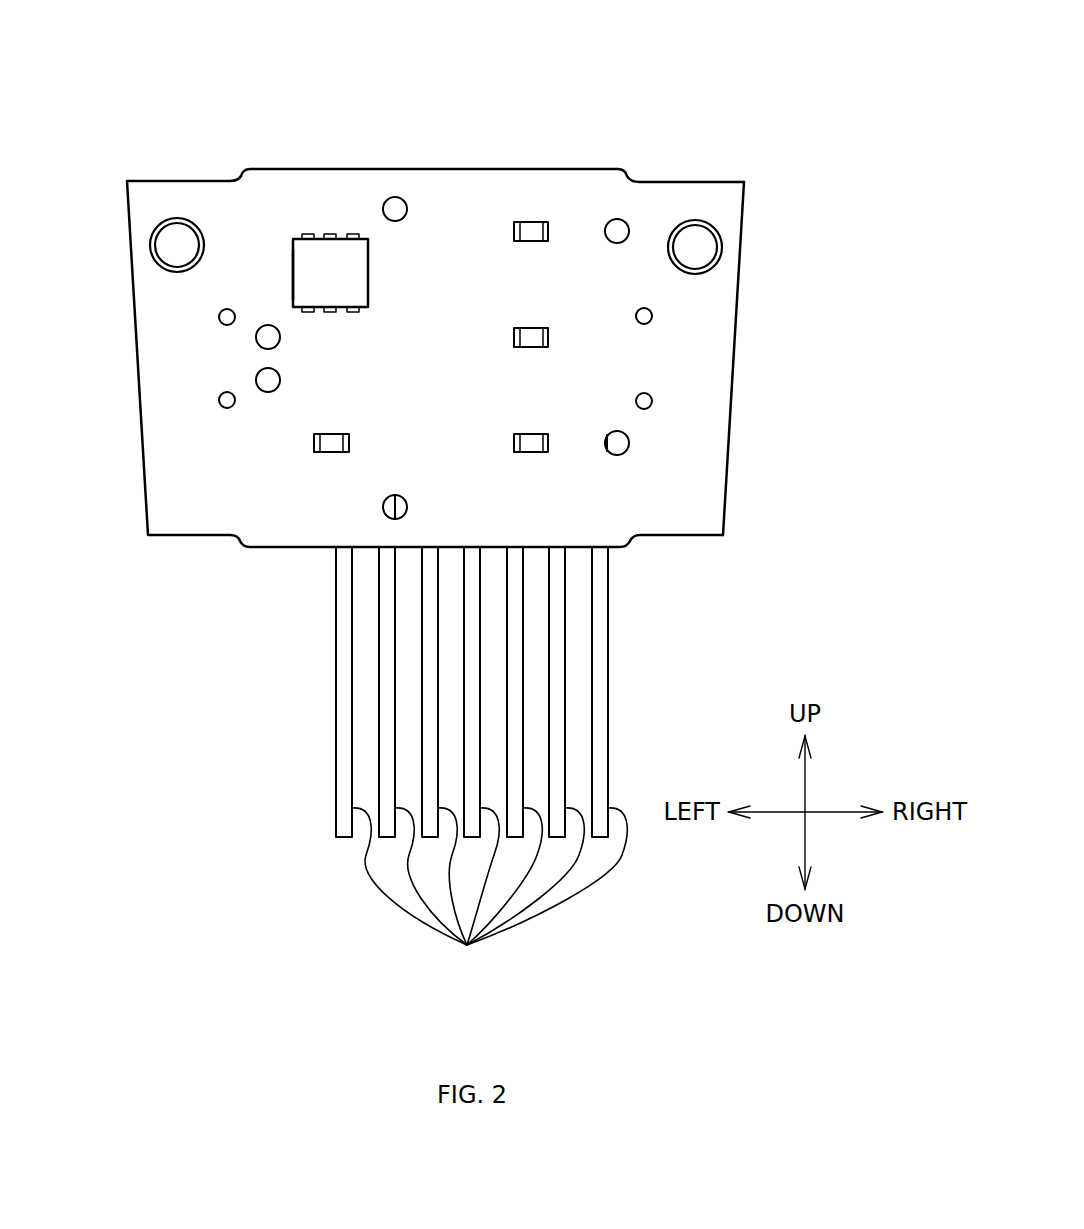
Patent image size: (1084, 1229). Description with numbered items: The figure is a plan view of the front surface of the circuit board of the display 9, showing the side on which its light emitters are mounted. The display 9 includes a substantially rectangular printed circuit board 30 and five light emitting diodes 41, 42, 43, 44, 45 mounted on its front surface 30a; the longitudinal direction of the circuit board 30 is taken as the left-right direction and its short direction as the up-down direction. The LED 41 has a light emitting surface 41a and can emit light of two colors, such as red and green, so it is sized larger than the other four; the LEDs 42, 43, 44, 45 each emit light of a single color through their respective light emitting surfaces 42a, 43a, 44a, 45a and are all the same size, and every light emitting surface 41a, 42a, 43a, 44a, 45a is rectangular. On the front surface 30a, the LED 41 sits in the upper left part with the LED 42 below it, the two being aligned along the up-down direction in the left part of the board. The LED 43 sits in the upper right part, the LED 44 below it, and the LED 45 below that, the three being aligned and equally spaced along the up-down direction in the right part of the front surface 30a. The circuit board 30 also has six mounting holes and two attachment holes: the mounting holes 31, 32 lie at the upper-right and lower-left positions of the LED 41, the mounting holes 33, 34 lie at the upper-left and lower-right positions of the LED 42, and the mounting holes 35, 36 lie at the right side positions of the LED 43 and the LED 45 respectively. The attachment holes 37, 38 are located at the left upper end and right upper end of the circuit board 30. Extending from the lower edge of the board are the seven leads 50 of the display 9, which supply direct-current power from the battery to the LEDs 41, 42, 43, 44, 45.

The display 9 is at (848, 108).
The circuit board 30 is at (681, 177).
The front surface 30a is at (705, 375).
The mounting hole 31 is at (395, 209).
The mounting hole 32 is at (266, 340).
The mounting hole 33 is at (267, 382).
The mounting hole 34 is at (396, 496).
The mounting hole 35 is at (617, 231).
The mounting hole 36 is at (629, 443).
The attachment hole 37 is at (177, 222).
The attachment hole 38 is at (697, 248).
The light emitting diode 41 is at (368, 277).
The light emitting surface 41a is at (300, 272).
The light emitting diode 42 is at (349, 441).
The light emitting surface 42a is at (330, 443).
The light emitting diode 43 is at (548, 231).
The light emitting surface 43a is at (531, 231).
The light emitting diode 44 is at (548, 338).
The light emitting surface 44a is at (531, 337).
The light emitting diode 45 is at (547, 448).
The light emitting surface 45a is at (531, 443).
The leads 50 is at (481, 764).